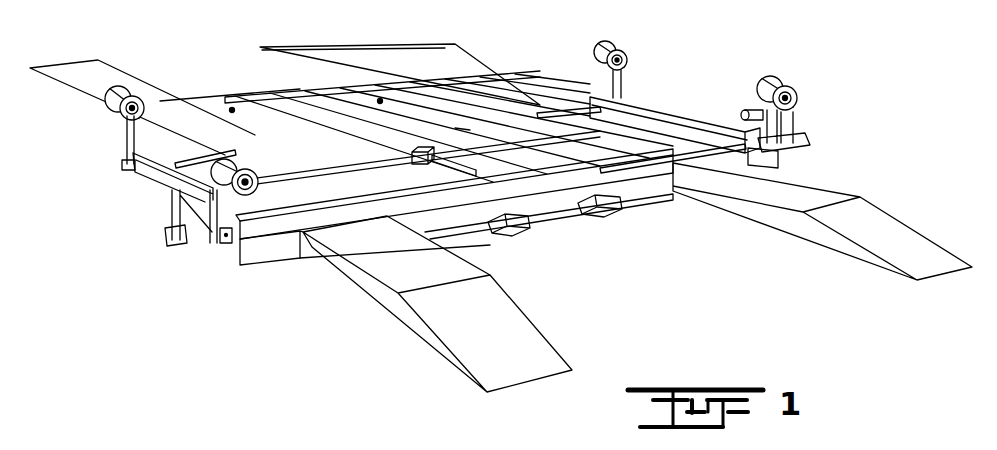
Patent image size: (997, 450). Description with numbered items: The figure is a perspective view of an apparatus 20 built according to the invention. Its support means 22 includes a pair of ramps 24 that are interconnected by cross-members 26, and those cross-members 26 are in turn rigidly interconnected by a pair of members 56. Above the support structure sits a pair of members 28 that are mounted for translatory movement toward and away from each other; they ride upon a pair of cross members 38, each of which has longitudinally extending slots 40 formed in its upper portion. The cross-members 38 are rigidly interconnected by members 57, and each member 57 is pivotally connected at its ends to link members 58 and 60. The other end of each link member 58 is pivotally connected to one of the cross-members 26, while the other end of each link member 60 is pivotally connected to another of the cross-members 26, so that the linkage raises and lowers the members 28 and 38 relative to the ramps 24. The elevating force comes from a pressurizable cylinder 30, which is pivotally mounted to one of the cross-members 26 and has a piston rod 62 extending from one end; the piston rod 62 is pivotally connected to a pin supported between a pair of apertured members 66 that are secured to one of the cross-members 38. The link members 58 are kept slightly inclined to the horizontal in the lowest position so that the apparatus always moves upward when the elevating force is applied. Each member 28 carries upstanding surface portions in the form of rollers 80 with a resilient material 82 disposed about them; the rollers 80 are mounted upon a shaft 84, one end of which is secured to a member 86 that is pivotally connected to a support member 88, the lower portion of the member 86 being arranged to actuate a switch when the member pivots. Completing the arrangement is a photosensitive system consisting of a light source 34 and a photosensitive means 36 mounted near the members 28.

The apparatus 20 is at (392, 304).
The support means 22 is at (676, 210).
The ramps 24 is at (90, 107).
The cross-members 26 is at (253, 90).
The members 28 is at (155, 194).
The pressurizable cylinder 30 is at (477, 180).
The light source 34 is at (753, 113).
The photosensitive means 36 is at (173, 207).
The cross members 38 is at (270, 255).
The longitudinally extending slots 40 is at (217, 160).
The members 56 is at (297, 103).
The members 57 is at (343, 192).
The link members 58 is at (232, 106).
The link members 60 is at (500, 233).
The piston rod 62 is at (447, 157).
The apertured members 66 is at (397, 167).
The rollers 80 is at (623, 60).
The resilient material 82 is at (130, 108).
The shaft 84 is at (622, 62).
The member 86 is at (130, 140).
The support member 88 is at (123, 165).